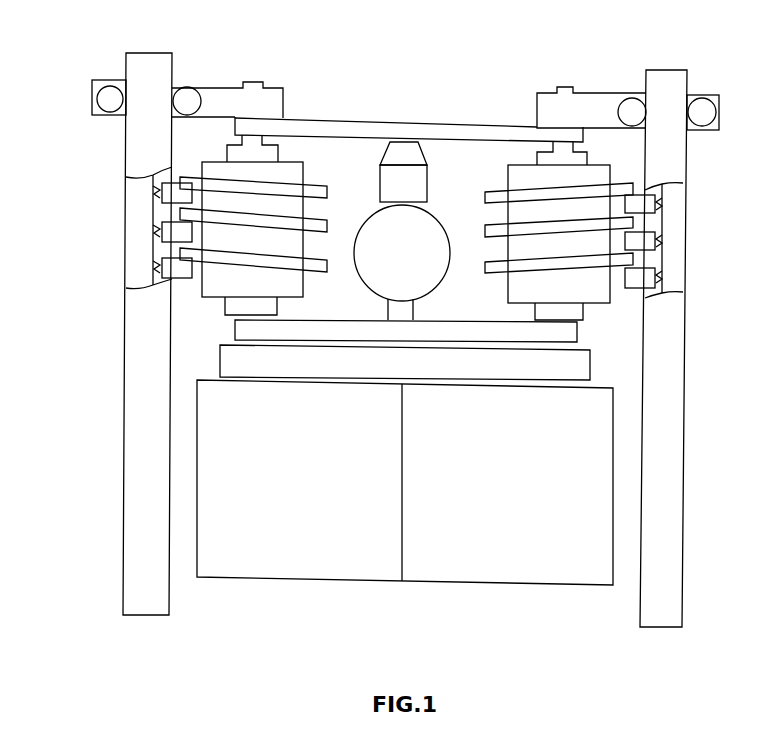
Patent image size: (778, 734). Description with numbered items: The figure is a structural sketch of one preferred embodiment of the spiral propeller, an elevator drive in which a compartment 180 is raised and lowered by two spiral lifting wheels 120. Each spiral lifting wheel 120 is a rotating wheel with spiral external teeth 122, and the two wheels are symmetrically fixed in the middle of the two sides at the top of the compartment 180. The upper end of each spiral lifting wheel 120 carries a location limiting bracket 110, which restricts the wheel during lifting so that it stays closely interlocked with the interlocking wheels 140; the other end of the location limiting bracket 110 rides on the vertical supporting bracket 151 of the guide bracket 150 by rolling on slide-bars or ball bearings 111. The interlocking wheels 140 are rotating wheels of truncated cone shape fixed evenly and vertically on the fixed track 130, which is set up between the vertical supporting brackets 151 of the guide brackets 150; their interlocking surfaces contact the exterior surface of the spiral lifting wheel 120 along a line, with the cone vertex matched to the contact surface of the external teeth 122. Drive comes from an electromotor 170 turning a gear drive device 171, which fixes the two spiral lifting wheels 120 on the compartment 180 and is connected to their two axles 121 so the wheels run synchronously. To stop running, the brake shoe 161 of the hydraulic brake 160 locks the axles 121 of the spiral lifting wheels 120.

The location limiting bracket 110 is at (372, 89).
The ball bearings 111 is at (110, 100).
The spiral lifting wheel 120 is at (283, 173).
The axles 121 is at (252, 137).
The spiral external teeth 122 is at (180, 177).
The fixed track 130 is at (152, 198).
The interlocking wheel 140 is at (152, 242).
The guide bracket 150 is at (147, 355).
The vertical supporting bracket 151 is at (160, 282).
The hydraulic brake 160 is at (405, 153).
The brake shoe 161 is at (355, 130).
The electromotor 170 is at (418, 230).
The gear drive device 171 is at (570, 335).
The compartment 180 is at (582, 447).